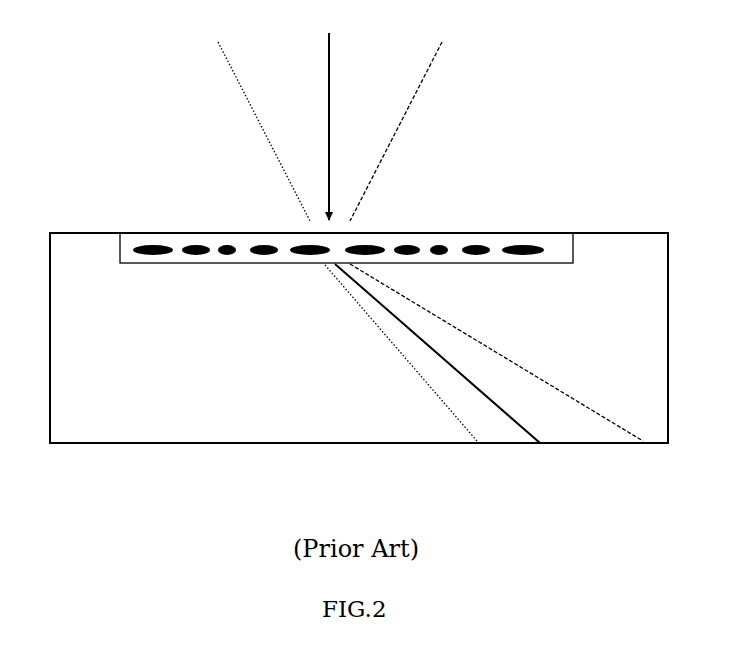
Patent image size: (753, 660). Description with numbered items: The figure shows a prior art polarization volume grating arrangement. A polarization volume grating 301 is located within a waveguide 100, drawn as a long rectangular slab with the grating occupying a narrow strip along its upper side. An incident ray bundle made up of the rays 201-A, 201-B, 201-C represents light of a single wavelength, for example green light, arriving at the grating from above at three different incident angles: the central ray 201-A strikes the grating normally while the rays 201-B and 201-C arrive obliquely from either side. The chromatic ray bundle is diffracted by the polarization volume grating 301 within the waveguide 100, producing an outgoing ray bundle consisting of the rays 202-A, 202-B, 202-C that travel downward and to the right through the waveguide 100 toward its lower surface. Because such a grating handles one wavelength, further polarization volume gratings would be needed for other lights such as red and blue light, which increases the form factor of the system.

The waveguide 100 is at (359, 338).
The polarization volume grating 301 is at (346, 259).
The incident ray 201-A is at (331, 116).
The incident ray 201-B is at (404, 123).
The incident ray 201-C is at (249, 121).
The diffracted ray 202-A is at (454, 353).
The diffracted ray 202-B is at (498, 352).
The diffracted ray 202-C is at (401, 353).